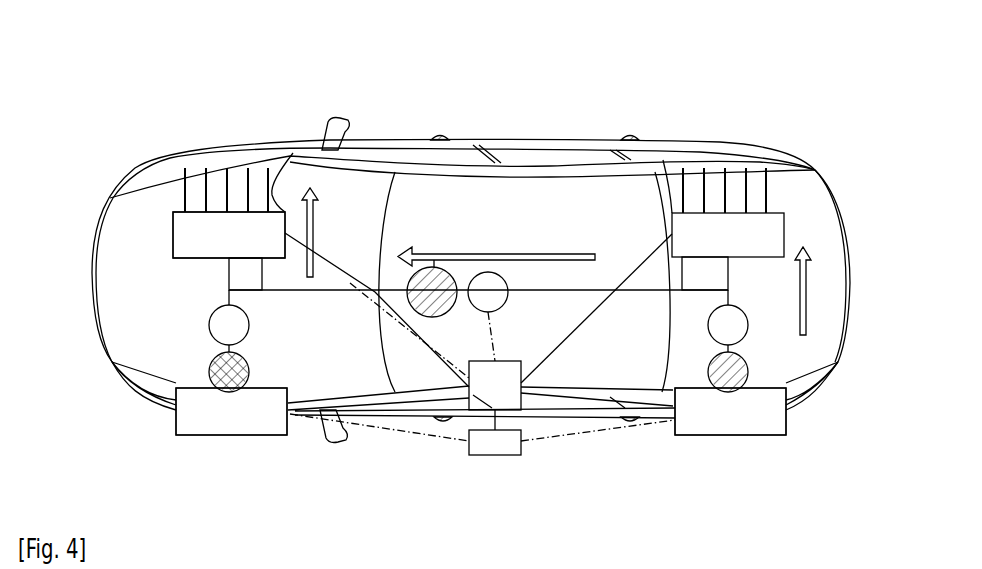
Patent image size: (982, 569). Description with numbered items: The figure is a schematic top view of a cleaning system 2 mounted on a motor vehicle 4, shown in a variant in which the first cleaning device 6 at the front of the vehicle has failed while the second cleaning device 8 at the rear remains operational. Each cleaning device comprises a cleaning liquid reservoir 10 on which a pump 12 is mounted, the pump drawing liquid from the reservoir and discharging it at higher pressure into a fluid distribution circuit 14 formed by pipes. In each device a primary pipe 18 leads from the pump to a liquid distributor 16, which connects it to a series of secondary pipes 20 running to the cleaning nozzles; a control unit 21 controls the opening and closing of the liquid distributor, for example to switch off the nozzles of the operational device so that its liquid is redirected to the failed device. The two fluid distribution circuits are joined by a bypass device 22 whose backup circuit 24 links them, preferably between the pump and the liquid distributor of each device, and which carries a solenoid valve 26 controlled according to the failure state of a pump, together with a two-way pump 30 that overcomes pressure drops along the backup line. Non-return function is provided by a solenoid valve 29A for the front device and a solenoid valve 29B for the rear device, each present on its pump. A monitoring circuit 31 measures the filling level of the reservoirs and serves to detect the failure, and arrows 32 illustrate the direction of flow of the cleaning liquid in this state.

The cleaning system 2 is at (691, 109).
The motor vehicle 4 is at (775, 148).
The first cleaning device 6 is at (267, 440).
The second cleaning device 8 is at (800, 436).
The cleaning liquid reservoir 10 is at (170, 423).
The pump 12 is at (204, 366).
The fluid distribution circuit 14 is at (224, 297).
The liquid distributor 16 is at (170, 232).
The primary pipe 18 is at (224, 266).
The secondary pipes 20 is at (180, 193).
The control unit 21 is at (527, 377).
The bypass device 22 is at (602, 284).
The backup circuit 24 is at (390, 284).
The solenoid valve 26 is at (487, 268).
The solenoid valve 29A is at (206, 322).
The solenoid valve 29B is at (753, 330).
The two-way pump 30 is at (434, 254).
The monitoring circuit 31 is at (527, 448).
The arrows 32 is at (309, 182).